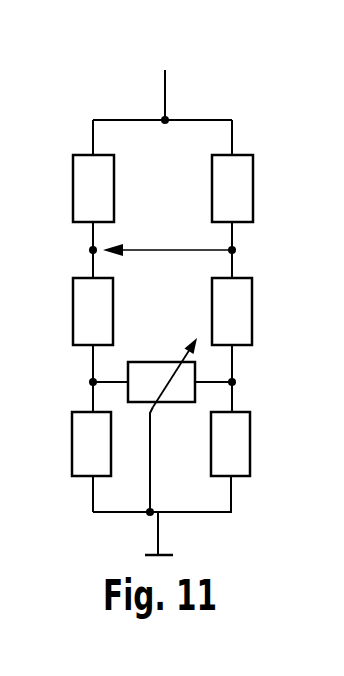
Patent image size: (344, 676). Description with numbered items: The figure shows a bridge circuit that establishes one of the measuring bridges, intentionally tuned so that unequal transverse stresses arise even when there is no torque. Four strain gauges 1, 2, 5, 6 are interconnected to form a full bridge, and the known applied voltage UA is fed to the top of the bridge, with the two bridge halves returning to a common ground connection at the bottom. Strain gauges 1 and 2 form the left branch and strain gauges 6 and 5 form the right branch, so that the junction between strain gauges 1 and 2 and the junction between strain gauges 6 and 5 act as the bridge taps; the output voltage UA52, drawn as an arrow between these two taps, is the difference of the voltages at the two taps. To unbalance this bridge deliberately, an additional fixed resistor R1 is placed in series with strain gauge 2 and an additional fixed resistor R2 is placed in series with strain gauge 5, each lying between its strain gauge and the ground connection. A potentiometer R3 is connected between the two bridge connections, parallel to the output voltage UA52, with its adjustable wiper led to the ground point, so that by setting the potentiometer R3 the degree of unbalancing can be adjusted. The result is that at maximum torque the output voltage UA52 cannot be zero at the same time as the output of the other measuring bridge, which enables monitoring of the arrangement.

The strain gauge 1 is at (93, 188).
The strain gauge 2 is at (93, 311).
The strain gauge 5 is at (232, 311).
The strain gauge 6 is at (232, 188).
The fixed resistor R1 is at (91, 444).
The fixed resistor R2 is at (230, 444).
The potentiometer R3 is at (162, 425).
The applied voltage UA is at (166, 79).
The bridge output voltage UA52 is at (167, 233).